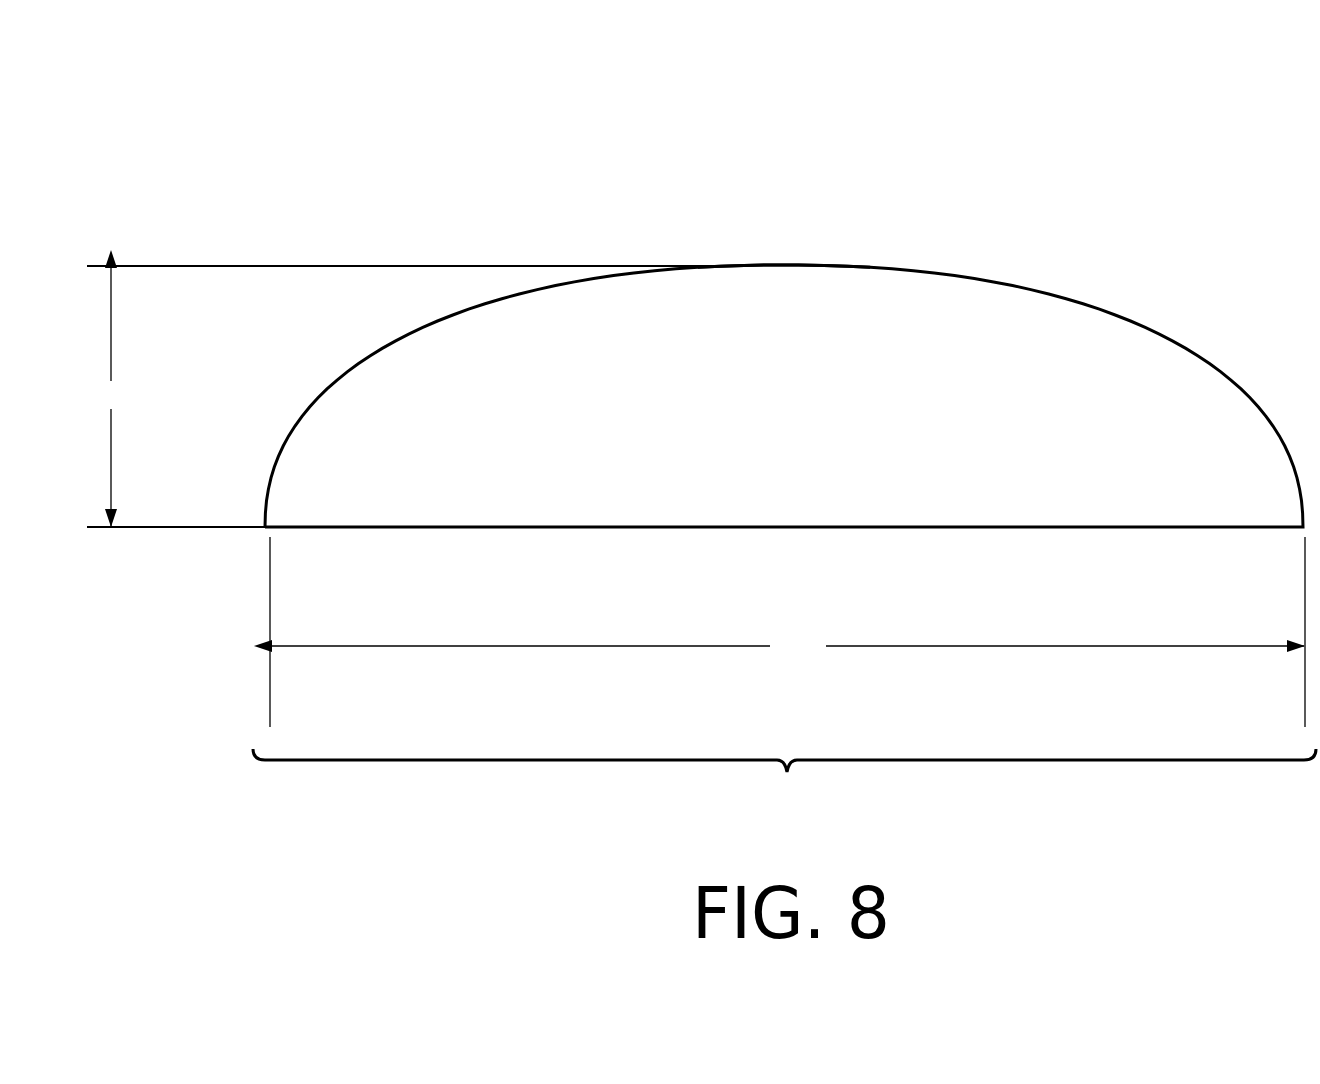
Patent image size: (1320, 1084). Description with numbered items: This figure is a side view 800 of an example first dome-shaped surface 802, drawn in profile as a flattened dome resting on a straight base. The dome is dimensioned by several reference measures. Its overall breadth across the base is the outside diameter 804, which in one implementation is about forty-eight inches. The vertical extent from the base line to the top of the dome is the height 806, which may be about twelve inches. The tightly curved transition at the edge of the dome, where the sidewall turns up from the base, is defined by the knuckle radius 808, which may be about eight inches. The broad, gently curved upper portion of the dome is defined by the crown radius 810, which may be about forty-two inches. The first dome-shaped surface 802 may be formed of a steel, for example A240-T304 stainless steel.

The side view 800 is at (767, 500).
The first dome-shaped surface 802 is at (263, 99).
The outside diameter 804 is at (787, 632).
The height 806 is at (111, 396).
The knuckle radius 808 is at (298, 424).
The crown radius 810 is at (784, 257).